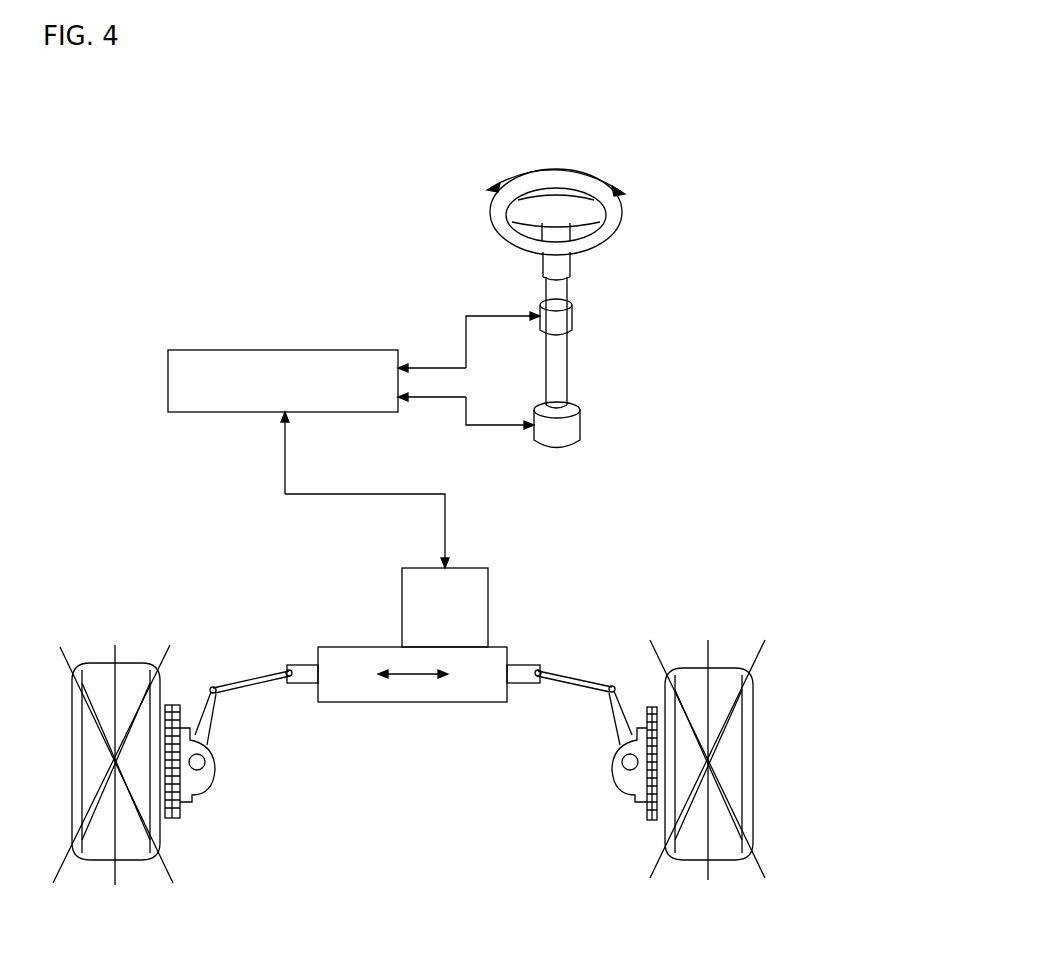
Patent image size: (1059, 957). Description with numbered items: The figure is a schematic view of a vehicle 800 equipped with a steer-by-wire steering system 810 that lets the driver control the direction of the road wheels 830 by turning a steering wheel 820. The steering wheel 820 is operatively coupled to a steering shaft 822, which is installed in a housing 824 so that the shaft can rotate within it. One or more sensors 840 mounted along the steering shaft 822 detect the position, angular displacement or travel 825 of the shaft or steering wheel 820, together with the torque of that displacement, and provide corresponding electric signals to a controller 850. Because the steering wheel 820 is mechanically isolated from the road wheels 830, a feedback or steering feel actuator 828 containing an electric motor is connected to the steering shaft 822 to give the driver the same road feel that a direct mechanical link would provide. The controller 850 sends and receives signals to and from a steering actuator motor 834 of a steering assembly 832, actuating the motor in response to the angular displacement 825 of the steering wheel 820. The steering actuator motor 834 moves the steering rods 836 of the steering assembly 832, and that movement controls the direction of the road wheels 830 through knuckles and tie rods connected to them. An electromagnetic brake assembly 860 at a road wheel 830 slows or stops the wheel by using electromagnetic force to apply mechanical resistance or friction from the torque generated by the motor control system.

The vehicle 800 is at (150, 129).
The steering system 810 is at (716, 372).
The steering wheel 820 is at (620, 215).
The steering shaft 822 is at (566, 292).
The housing 824 is at (568, 266).
The angular displacement 825 is at (585, 166).
The steering feel actuator 828 is at (575, 434).
The road wheels 830 is at (150, 823).
The steering assembly 832 is at (428, 702).
The steering actuator motor 834 is at (488, 605).
The steering rods 836 is at (302, 690).
The sensors 840 is at (570, 322).
The controller 850 is at (240, 413).
The electromagnetic brake assembly 860 is at (163, 745).